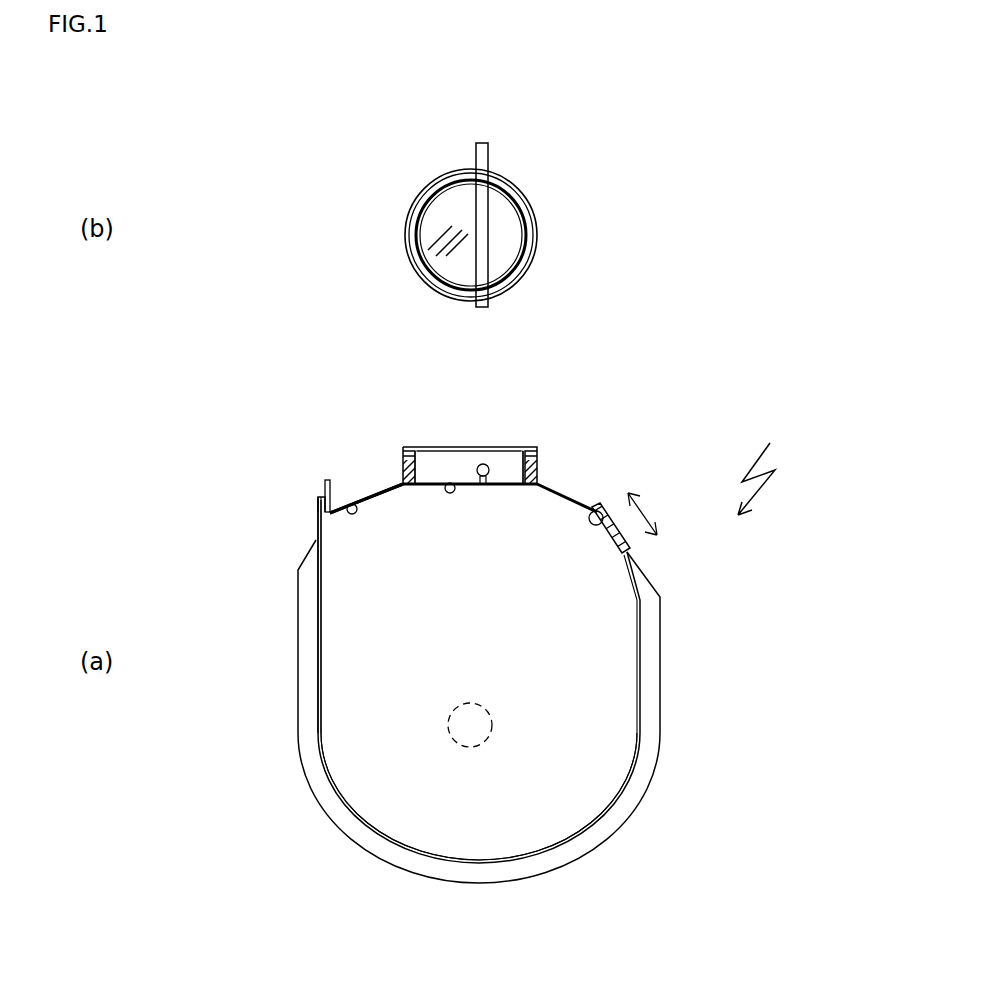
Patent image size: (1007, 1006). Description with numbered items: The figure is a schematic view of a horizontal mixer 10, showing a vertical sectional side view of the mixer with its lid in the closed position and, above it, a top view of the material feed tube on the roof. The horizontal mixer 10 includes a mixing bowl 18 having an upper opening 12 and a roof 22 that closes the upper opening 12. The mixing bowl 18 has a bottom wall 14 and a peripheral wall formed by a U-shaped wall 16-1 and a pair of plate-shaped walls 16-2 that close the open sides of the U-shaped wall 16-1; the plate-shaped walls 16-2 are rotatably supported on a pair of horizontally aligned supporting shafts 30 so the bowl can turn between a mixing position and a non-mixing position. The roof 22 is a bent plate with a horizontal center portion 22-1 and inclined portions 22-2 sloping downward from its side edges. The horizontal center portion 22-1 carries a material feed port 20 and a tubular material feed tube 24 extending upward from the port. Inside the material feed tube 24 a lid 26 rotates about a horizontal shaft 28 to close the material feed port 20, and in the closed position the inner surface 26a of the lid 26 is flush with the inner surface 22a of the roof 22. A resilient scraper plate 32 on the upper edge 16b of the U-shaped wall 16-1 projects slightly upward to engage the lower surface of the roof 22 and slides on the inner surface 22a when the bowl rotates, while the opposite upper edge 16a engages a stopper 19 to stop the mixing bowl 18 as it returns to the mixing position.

The horizontal mixer 10 is at (770, 459).
The upper opening 12 is at (390, 512).
The bottom wall 14 is at (436, 860).
The U-shaped wall 16-1 is at (318, 740).
The plate-shaped walls 16-2 is at (380, 762).
The upper edge 16a is at (318, 498).
The upper edge 16b is at (610, 482).
The mixing bowl 18 is at (663, 749).
The stopper 19 is at (325, 487).
The material feed port 20 is at (515, 468).
The roof 22 is at (463, 564).
The horizontal center portion 22-1 is at (470, 536).
The inclined portions 22-2 is at (362, 500).
The inner surface 22a is at (355, 504).
The material feed tube 24 is at (537, 470).
The lid 26 is at (433, 212).
The inner surface 26a is at (452, 482).
The horizontal shaft 28 is at (483, 142).
The supporting shafts 30 is at (482, 737).
The scraper plate 32 is at (625, 540).